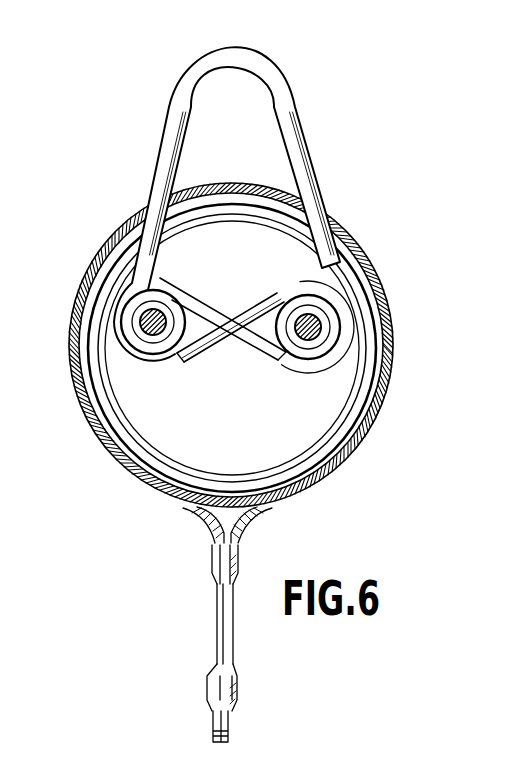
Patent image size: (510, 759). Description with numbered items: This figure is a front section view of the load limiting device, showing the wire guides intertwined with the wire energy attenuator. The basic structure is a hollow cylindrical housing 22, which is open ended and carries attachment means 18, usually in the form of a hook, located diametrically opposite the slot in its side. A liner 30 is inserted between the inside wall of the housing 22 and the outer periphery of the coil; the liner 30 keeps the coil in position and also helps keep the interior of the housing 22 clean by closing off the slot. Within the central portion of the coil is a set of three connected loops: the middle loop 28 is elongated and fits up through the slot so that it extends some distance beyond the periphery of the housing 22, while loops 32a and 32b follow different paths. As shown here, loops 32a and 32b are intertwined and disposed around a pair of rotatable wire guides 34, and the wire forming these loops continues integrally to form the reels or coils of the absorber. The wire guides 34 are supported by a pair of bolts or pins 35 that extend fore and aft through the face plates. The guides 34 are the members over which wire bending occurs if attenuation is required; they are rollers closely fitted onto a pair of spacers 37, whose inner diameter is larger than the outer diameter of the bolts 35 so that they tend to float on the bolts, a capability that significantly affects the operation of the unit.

The attachment means 18 is at (214, 649).
The housing 22 is at (344, 236).
The middle loop 28 is at (262, 64).
The liner 30 is at (391, 343).
The loop 32a is at (154, 277).
The loop 32b is at (314, 285).
The rotatable wire guides 34 is at (182, 313).
The bolts or pins 35 is at (158, 331).
The spacers 37 is at (178, 360).